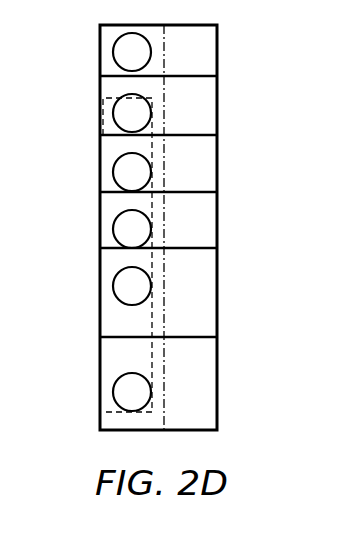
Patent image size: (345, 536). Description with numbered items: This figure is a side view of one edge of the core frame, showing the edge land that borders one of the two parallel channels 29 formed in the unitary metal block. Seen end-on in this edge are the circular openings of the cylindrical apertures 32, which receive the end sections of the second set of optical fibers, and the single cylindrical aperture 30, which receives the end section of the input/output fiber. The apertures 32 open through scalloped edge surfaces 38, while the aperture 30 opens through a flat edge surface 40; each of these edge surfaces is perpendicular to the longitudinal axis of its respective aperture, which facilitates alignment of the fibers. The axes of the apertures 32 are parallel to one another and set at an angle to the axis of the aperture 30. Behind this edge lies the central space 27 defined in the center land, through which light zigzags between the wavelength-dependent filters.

The channel 29 is at (158, 215).
The cylindrical apertures 32 is at (95, 167).
The edge surfaces 38 is at (205, 52).
The central space 27 is at (97, 255).
The cylindrical aperture 30 is at (95, 388).
The flat edge surface 40 is at (205, 360).